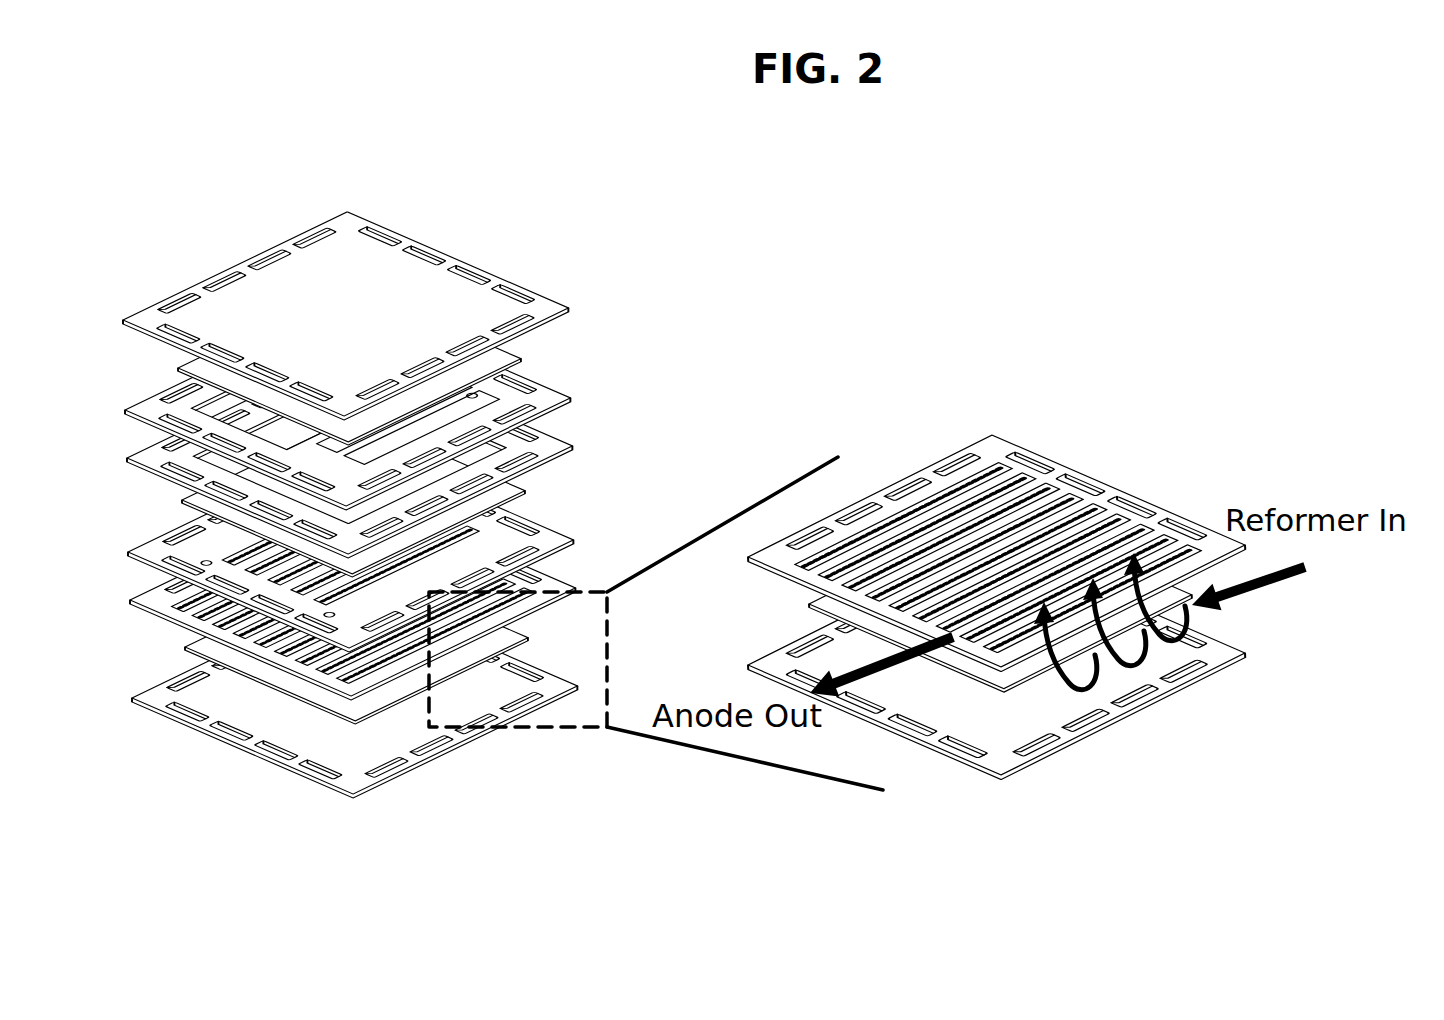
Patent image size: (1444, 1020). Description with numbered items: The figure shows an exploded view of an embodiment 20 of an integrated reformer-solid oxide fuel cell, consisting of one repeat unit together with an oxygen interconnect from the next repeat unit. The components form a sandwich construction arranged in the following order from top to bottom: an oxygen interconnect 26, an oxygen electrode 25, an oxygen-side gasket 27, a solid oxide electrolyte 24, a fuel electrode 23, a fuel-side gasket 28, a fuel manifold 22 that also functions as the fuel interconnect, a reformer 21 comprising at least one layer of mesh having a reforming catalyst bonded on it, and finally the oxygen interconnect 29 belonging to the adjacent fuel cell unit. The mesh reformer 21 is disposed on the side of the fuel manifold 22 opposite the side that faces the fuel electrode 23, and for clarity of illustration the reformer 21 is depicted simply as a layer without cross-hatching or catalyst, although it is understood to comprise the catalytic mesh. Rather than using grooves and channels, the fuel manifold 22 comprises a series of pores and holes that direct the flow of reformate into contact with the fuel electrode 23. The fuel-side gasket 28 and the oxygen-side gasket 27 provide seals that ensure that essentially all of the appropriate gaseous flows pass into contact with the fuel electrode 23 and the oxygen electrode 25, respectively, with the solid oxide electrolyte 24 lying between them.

The integrated reformer-solid oxide fuel cell embodiment 20 is at (433, 228).
The reformer 21 is at (1002, 703).
The fuel manifold 22 is at (1105, 477).
The fuel electrode 23 is at (520, 497).
The solid oxide electrolyte 24 is at (597, 413).
The oxygen electrode 25 is at (517, 350).
The oxygen interconnect 26 is at (513, 275).
The oxygen-side gasket 27 is at (547, 377).
The fuel-side gasket 28 is at (572, 545).
The oxygen interconnect from adjacent fuel cell unit 29 is at (1132, 733).